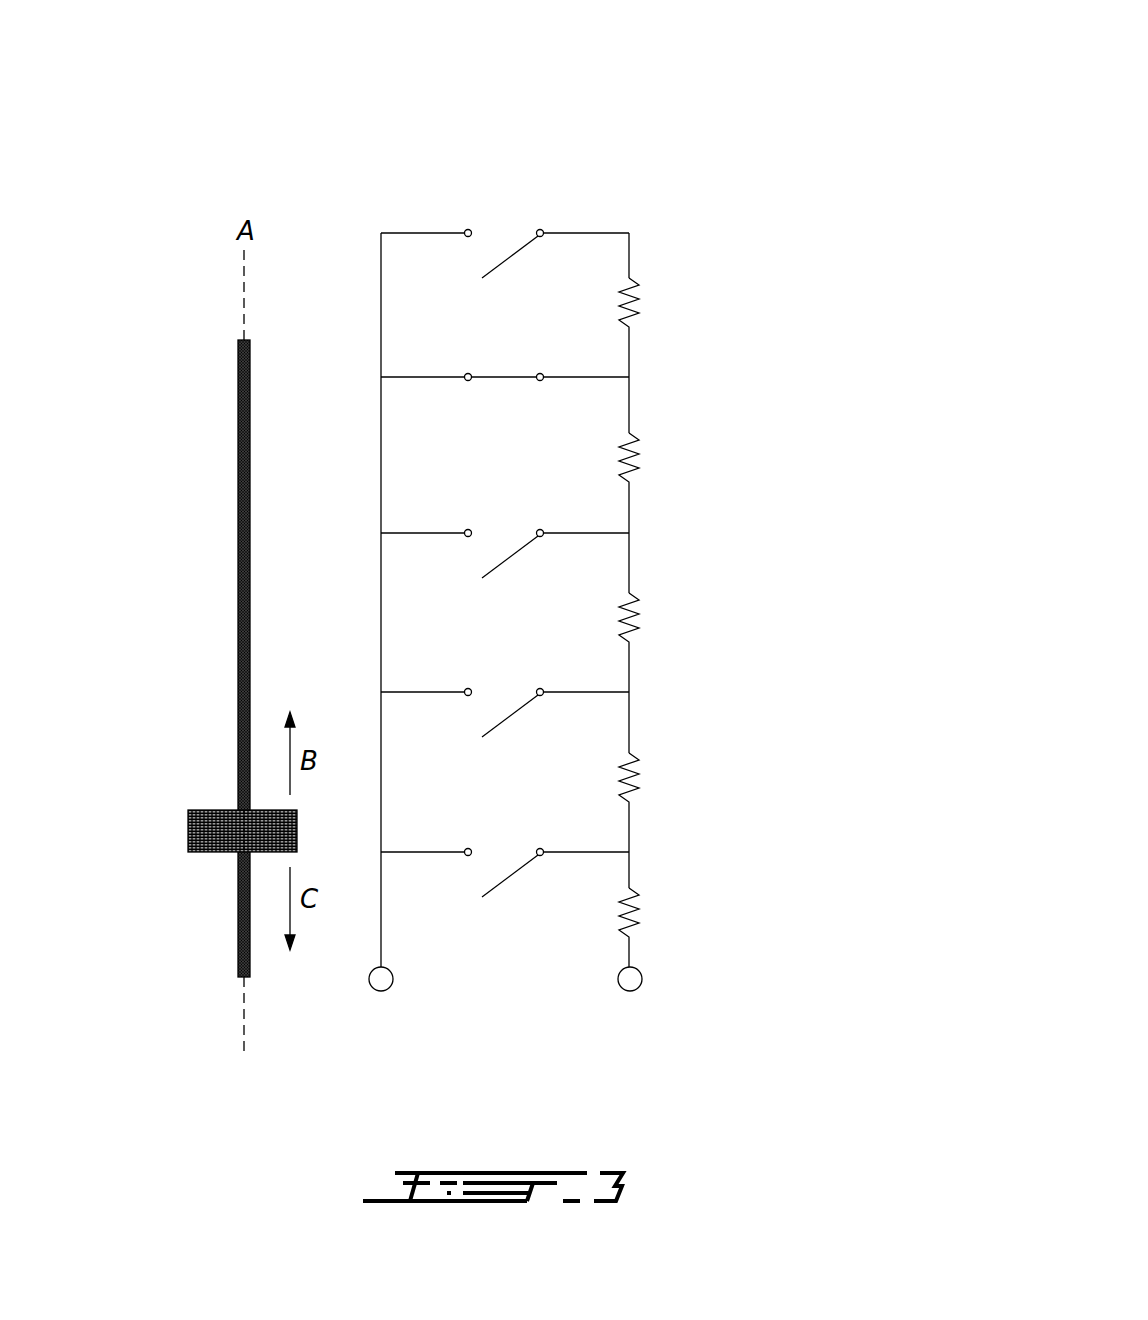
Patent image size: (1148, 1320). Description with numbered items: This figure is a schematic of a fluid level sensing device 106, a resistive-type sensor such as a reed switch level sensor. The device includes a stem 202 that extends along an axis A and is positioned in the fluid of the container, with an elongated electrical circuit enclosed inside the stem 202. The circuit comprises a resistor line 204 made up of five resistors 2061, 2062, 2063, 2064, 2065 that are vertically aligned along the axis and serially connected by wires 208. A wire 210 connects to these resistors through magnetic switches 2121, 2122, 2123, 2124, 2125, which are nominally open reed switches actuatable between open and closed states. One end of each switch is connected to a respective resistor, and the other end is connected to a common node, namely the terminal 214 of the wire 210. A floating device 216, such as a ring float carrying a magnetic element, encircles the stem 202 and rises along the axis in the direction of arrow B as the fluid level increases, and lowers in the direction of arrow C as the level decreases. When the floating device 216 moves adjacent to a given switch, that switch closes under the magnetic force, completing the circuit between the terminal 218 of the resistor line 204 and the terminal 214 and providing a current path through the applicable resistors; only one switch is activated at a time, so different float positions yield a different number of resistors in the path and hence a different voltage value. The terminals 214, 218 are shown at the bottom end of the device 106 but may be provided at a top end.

The fluid level sensing device 106 is at (792, 156).
The stem 202 is at (251, 404).
The resistor line 204 is at (627, 214).
The resistor 2061 is at (636, 922).
The resistor 2062 is at (636, 790).
The resistor 2063 is at (636, 630).
The resistor 2064 is at (636, 470).
The resistor 2065 is at (636, 311).
The wires 208 is at (630, 514).
The wire 210 is at (380, 300).
The magnetic switch 2121 is at (503, 849).
The magnetic switch 2122 is at (503, 689).
The magnetic switch 2123 is at (503, 530).
The magnetic switch 2124 is at (503, 374).
The magnetic switch 2125 is at (503, 230).
The terminal 214 is at (378, 992).
The floating device 216 is at (187, 829).
The terminal 218 is at (627, 992).